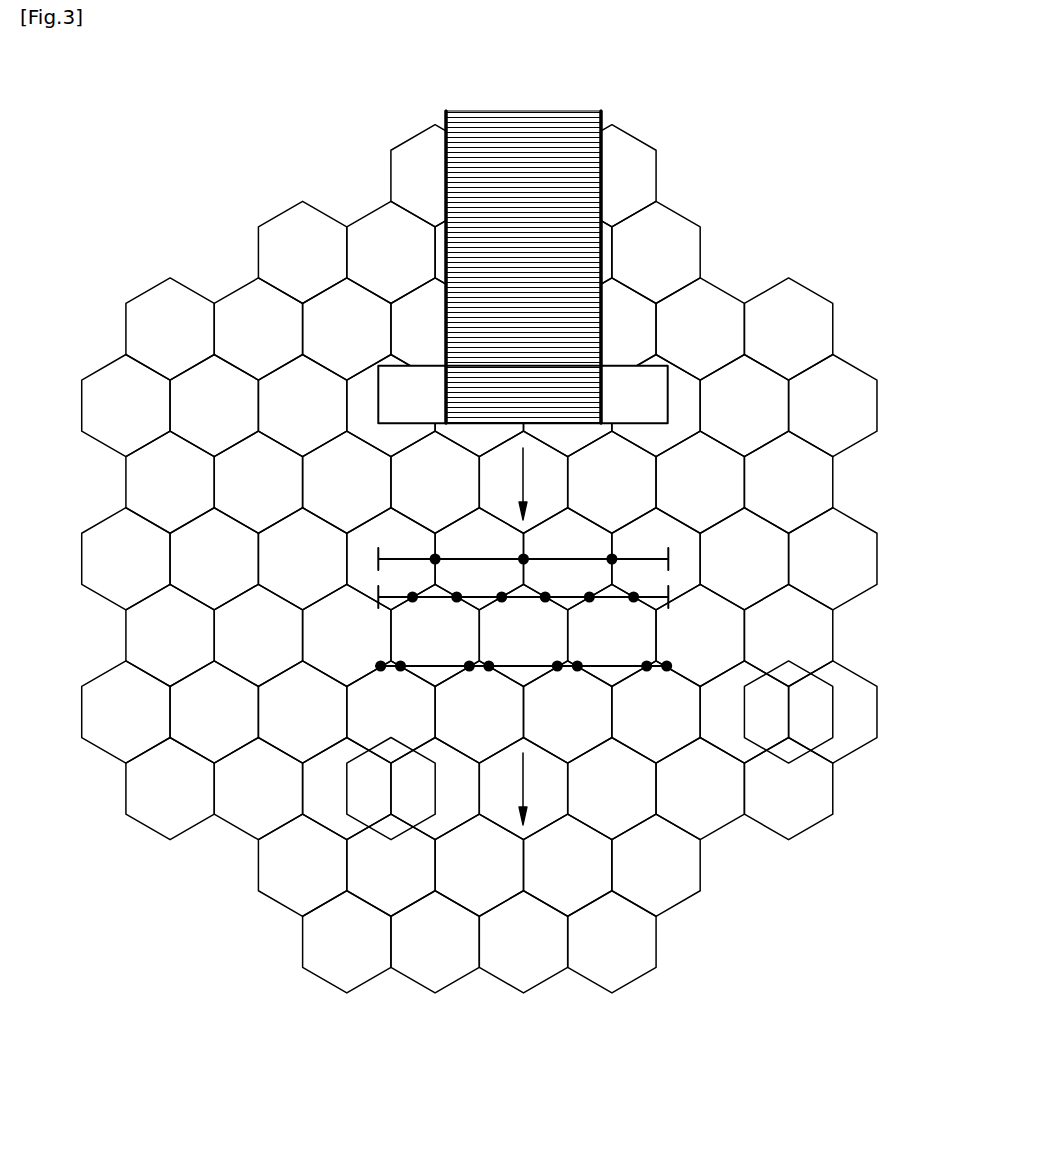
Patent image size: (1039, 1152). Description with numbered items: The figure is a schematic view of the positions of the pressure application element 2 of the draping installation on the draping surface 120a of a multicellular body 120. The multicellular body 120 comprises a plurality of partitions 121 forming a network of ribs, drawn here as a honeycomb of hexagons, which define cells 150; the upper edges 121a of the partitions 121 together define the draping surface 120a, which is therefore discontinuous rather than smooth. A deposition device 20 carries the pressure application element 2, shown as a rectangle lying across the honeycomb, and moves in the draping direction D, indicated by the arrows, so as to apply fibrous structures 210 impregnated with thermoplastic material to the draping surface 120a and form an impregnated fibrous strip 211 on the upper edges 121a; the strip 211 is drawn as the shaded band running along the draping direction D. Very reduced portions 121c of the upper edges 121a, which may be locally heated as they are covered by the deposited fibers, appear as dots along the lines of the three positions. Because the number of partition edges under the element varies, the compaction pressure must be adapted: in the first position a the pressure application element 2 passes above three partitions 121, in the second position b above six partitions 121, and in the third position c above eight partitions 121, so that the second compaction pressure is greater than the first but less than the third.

The deposition device 20 is at (358, 184).
The pressure application element 2 is at (395, 377).
The multicellular body 120 is at (788, 331).
The draping surface 120a is at (700, 482).
The partition 121 is at (788, 713).
The upper edge 121a is at (413, 828).
The reduced portion of upper edge 121c is at (413, 599).
The cell 150 is at (302, 556).
The fibrous structure 210 is at (588, 381).
The impregnated fibrous strip 211 is at (460, 163).
The first position a is at (645, 557).
The second position b is at (662, 594).
The third position c is at (481, 741).
The draping direction D is at (534, 636).